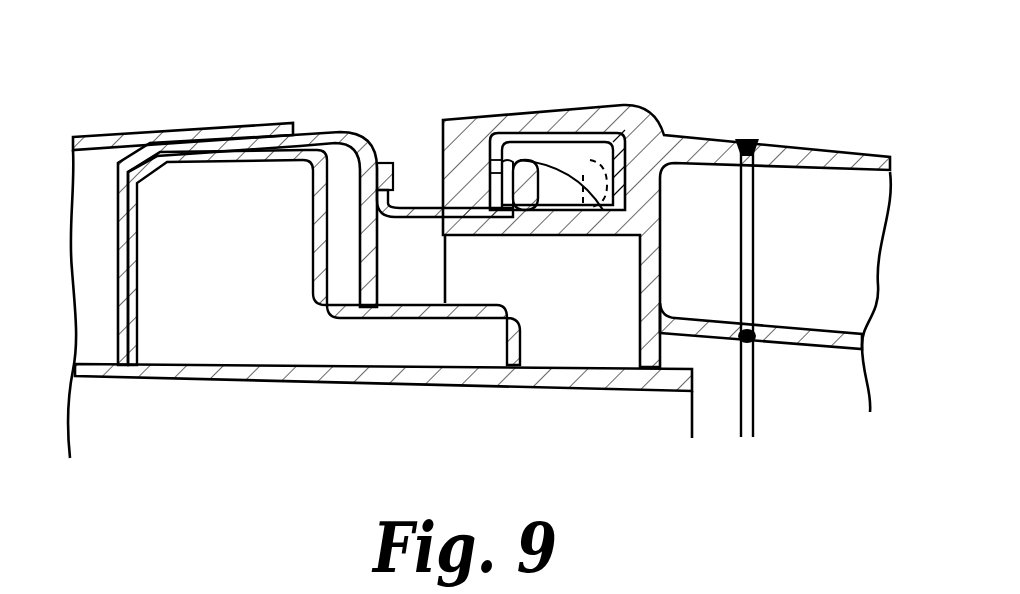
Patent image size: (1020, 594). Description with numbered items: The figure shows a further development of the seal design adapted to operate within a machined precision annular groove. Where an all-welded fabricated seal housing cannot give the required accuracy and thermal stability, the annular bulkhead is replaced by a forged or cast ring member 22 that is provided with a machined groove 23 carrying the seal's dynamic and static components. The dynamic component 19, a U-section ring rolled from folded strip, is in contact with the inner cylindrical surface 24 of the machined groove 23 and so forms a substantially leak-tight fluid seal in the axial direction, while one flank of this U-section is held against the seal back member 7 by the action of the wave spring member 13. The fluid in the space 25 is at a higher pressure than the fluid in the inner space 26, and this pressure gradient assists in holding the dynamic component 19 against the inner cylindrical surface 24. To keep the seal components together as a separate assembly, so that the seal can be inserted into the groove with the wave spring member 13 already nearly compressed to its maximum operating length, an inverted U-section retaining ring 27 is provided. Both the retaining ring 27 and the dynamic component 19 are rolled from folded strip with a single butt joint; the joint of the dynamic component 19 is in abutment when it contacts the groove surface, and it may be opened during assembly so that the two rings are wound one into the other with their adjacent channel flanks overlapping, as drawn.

The space 25 is at (338, 104).
The seal back member 7 is at (370, 232).
The dynamic component 19 is at (423, 212).
The machined groove 23 is at (458, 174).
The inner cylindrical surface 24 is at (565, 223).
The wave spring member 13 is at (527, 175).
The retaining ring 27 is at (593, 115).
The ring member 22 is at (607, 108).
The inner space 26 is at (575, 310).